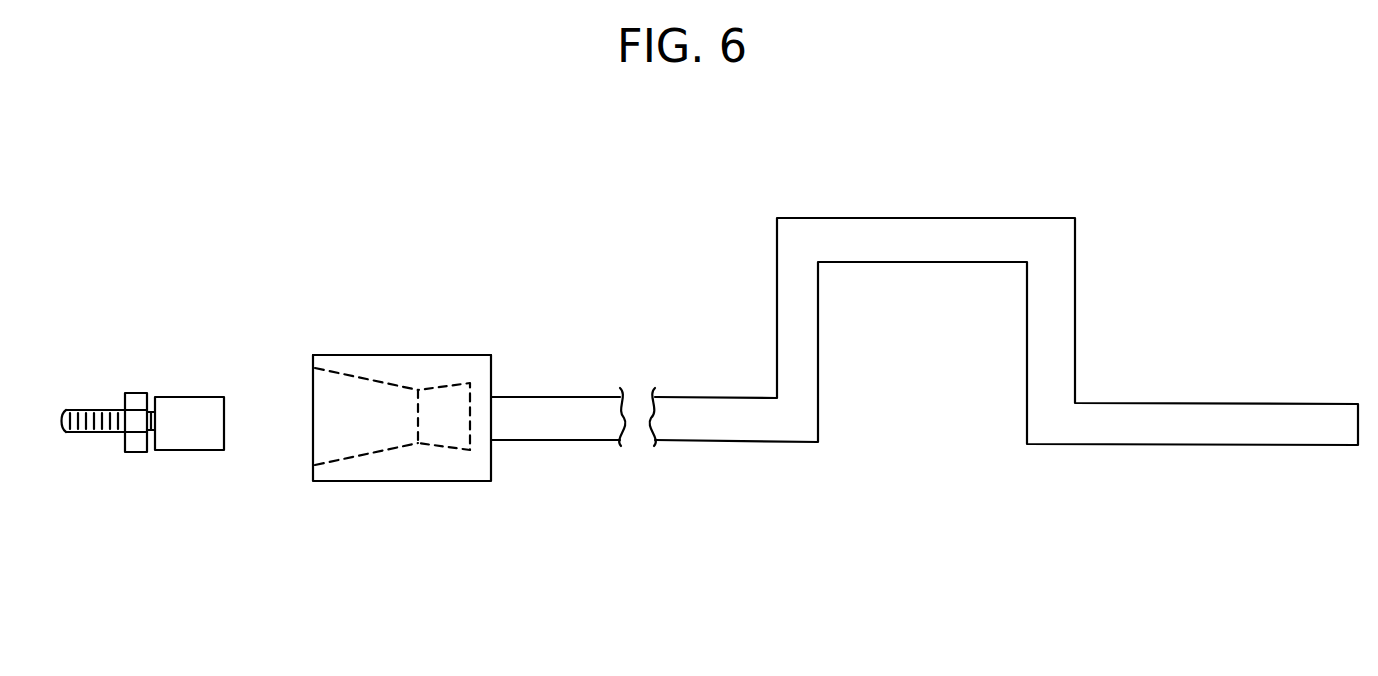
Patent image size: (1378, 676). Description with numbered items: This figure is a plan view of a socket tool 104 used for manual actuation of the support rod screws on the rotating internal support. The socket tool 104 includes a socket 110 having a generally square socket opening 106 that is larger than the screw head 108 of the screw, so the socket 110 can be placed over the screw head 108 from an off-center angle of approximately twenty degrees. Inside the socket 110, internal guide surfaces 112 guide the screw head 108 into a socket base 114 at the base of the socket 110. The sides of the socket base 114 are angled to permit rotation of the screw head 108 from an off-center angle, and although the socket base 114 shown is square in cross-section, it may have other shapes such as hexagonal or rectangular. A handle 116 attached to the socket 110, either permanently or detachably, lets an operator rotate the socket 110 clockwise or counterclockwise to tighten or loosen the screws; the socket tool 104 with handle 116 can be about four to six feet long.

The socket tool 104 is at (318, 533).
The socket opening 106 is at (313, 390).
The screw head 108 is at (185, 450).
The socket 110 is at (408, 355).
The internal guide surfaces 112 is at (383, 452).
The socket base 114 is at (452, 450).
The handle 116 is at (963, 218).